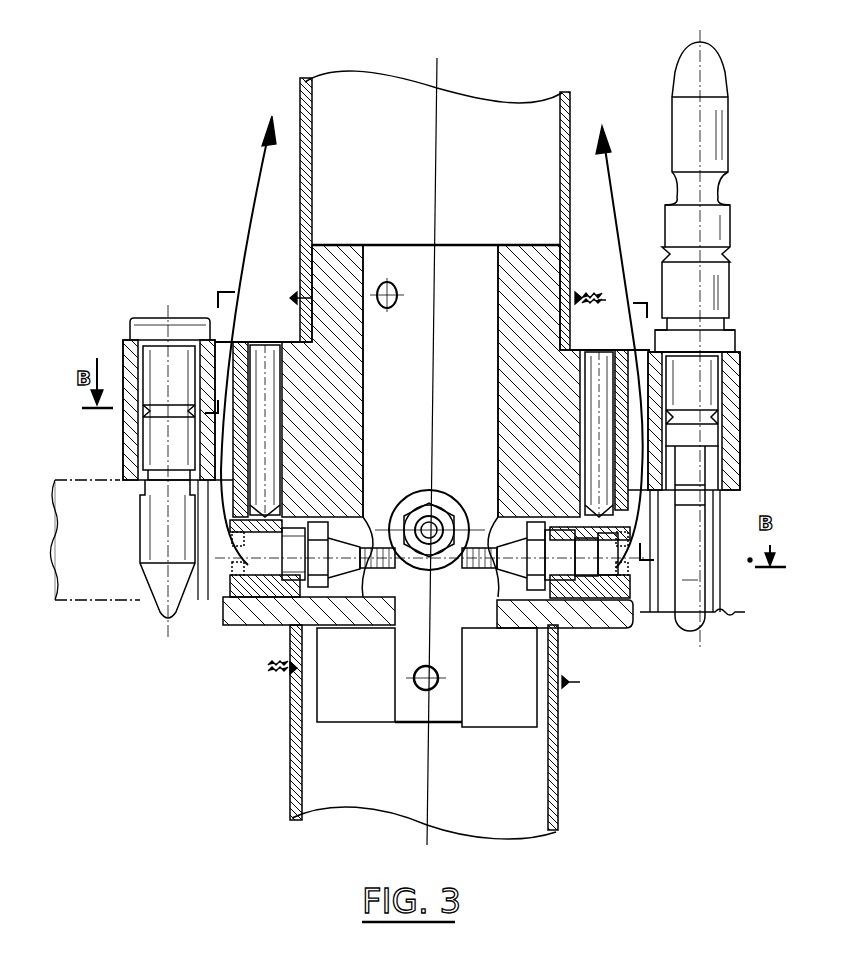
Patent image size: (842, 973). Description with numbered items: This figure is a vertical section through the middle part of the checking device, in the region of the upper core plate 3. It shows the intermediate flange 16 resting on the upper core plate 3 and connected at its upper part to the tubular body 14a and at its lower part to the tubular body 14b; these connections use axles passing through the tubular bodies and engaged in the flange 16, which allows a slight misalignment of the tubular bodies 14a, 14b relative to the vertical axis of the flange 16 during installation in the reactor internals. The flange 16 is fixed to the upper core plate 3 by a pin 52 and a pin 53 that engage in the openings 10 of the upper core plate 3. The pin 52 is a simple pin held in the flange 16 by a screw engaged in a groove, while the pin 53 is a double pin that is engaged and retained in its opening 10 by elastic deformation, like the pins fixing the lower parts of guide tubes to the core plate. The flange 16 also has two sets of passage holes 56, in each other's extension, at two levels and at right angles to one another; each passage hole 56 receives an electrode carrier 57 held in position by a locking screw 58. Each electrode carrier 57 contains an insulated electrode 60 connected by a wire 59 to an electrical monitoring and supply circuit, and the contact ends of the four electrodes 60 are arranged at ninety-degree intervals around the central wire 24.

The upper core plate 3 is at (68, 608).
The openings 10 is at (725, 614).
The tubular body 14a is at (300, 176).
The tubular body 14b is at (290, 766).
The intermediate flange 16 is at (350, 490).
The wire 24 is at (428, 787).
The pin 52 is at (138, 328).
The pin 53 is at (722, 298).
The passage holes 56 is at (222, 575).
The electrode carrier 57 is at (250, 618).
The locking screw 58 is at (600, 364).
The wire 59 is at (236, 248).
The insulated electrode 60 is at (628, 630).